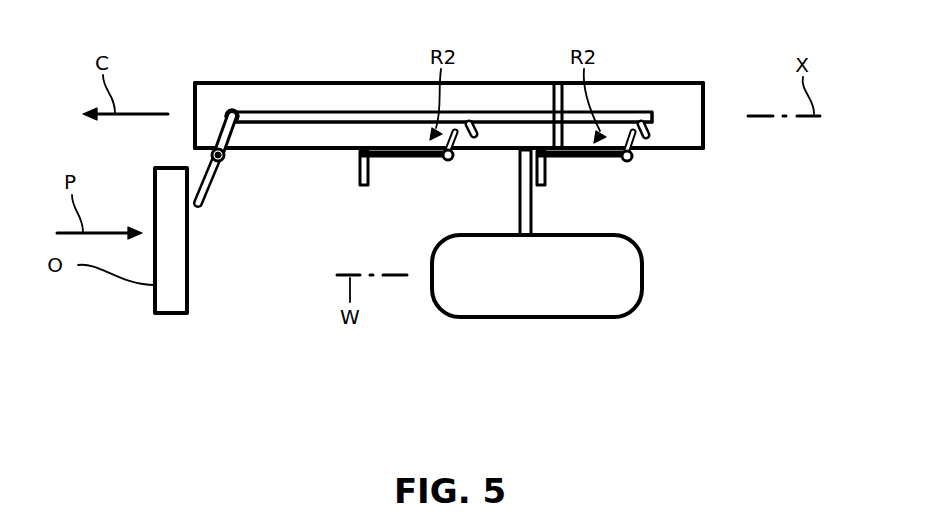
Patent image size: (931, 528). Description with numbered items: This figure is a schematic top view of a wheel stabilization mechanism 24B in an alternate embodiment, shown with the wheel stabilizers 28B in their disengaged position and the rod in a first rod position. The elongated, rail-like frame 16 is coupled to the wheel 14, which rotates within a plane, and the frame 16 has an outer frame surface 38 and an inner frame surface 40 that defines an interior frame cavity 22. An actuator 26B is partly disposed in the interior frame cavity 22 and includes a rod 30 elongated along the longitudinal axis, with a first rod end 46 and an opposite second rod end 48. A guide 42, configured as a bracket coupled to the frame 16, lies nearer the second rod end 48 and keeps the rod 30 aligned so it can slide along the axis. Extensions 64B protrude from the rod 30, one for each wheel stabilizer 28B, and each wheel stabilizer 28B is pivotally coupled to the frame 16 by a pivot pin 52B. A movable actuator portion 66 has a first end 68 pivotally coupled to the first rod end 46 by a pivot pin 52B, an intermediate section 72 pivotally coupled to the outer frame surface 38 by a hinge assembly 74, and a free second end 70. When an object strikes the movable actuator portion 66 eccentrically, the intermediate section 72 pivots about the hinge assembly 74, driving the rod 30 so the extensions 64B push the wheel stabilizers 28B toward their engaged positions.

The wheel 14 is at (645, 256).
The frame 16 is at (665, 82).
The interior frame cavity 22 is at (344, 78).
The wheel stabilization mechanism 24B is at (327, 136).
The actuator 26B is at (297, 124).
The wheel stabilizer 28B is at (412, 158).
The rod 30 is at (364, 112).
The outer frame surface 38 is at (684, 150).
The inner frame surface 40 is at (318, 97).
The guide 42 is at (552, 86).
The first rod end 46 is at (239, 111).
The second rod end 48 is at (652, 118).
The pivot pin 52B is at (234, 109).
The extension 64B is at (474, 124).
The movable actuator portion 66 is at (208, 160).
The first end 68 is at (196, 118).
The second end 70 is at (200, 207).
The intermediate section 72 is at (224, 172).
The hinge assembly 74 is at (229, 160).